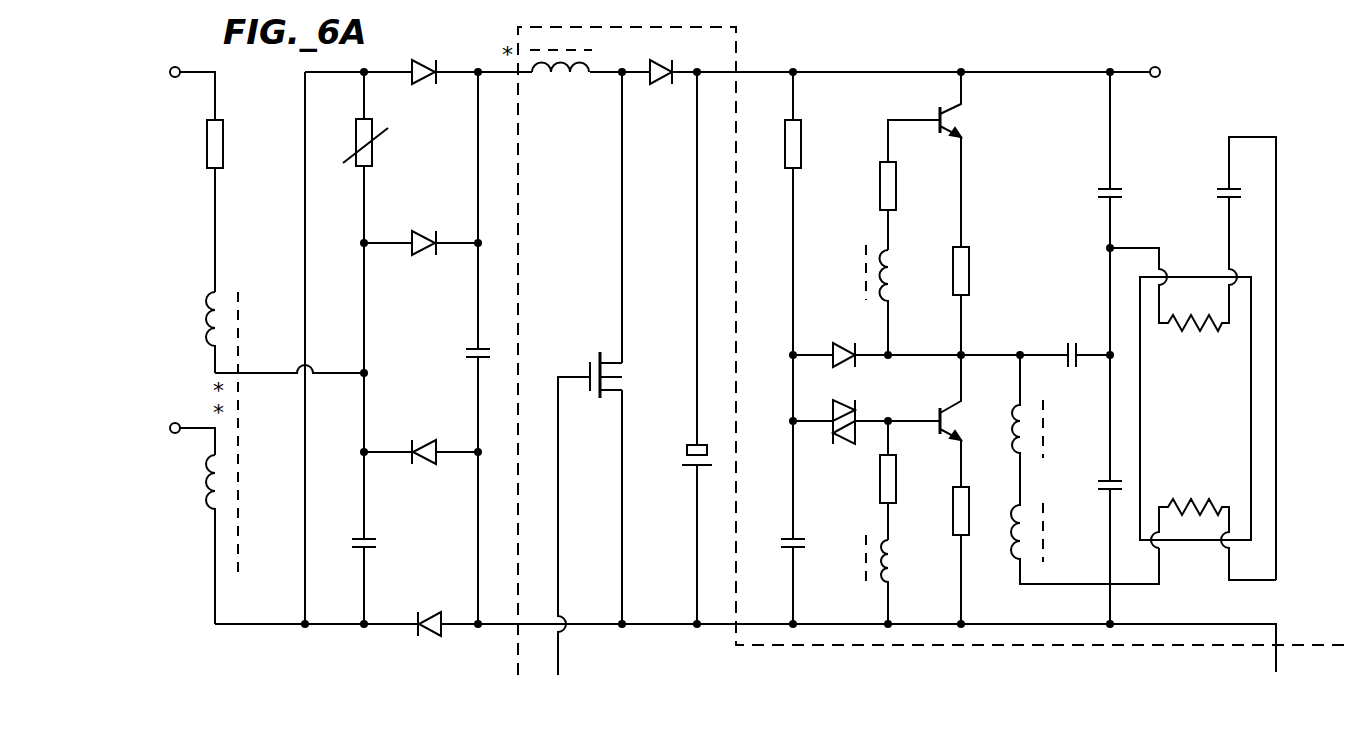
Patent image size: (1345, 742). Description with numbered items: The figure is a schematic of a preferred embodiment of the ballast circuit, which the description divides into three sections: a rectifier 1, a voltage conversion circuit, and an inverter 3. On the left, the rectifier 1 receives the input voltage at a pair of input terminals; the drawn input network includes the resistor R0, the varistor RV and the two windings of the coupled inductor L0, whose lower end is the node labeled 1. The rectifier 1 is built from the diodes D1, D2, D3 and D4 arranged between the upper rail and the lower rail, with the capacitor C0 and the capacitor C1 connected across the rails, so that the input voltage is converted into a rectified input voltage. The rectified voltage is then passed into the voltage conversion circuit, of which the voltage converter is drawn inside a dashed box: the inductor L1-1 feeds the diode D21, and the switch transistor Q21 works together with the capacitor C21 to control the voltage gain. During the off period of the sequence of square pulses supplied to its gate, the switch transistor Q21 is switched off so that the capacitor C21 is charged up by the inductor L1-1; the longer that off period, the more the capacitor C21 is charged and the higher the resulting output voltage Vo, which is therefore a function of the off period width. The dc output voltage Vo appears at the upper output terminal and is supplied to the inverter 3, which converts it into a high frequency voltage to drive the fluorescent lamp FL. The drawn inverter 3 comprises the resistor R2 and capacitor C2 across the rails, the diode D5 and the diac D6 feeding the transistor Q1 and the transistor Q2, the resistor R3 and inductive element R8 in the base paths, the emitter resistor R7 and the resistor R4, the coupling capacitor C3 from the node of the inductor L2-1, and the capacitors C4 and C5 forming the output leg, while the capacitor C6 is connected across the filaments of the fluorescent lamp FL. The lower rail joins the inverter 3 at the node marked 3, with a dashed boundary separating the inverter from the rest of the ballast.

The resistor R0 is at (231, 144).
The varistor RV is at (375, 142).
The inductor L0 is at (227, 458).
The diode D1 is at (425, 86).
The diode D2 is at (421, 230).
The diode D3 is at (421, 439).
The diode D4 is at (428, 612).
The capacitor C0 is at (380, 543).
The capacitor C1 is at (463, 353).
The rectifier 1 is at (206, 623).
The inductor L1-1 is at (561, 79).
The diode D21 is at (666, 88).
The switch transistor Q21 is at (614, 513).
The capacitor C21 is at (676, 454).
The resistor R2 is at (808, 144).
The capacitor C2 is at (780, 543).
The diode D5 is at (906, 343).
The diac D6 is at (866, 417).
The resistor R3 is at (895, 237).
The transistor Q1 is at (963, 159).
The resistor R7 is at (976, 301).
The transistor Q2 is at (985, 475).
The resistor R4 is at (873, 480).
The resistor R8 is at (896, 579).
The capacitor C3 is at (1065, 343).
The capacitor C4 is at (1092, 191).
The capacitor C5 is at (1092, 483).
The inductor L2-1 is at (1085, 482).
The fluorescent lamp FL is at (1193, 388).
The capacitor C6 is at (1229, 358).
The output voltage Vo is at (1170, 73).
The inverter 3 is at (1232, 634).